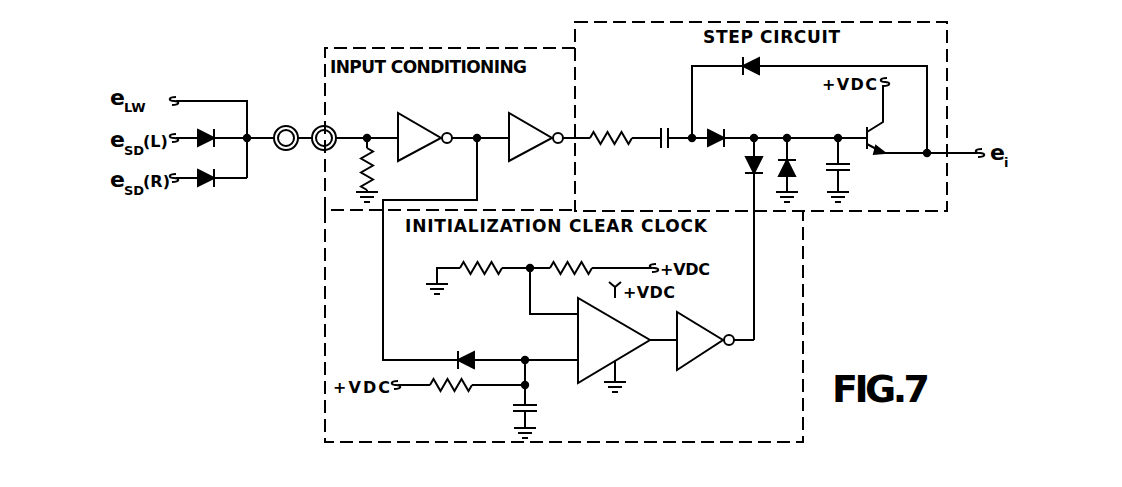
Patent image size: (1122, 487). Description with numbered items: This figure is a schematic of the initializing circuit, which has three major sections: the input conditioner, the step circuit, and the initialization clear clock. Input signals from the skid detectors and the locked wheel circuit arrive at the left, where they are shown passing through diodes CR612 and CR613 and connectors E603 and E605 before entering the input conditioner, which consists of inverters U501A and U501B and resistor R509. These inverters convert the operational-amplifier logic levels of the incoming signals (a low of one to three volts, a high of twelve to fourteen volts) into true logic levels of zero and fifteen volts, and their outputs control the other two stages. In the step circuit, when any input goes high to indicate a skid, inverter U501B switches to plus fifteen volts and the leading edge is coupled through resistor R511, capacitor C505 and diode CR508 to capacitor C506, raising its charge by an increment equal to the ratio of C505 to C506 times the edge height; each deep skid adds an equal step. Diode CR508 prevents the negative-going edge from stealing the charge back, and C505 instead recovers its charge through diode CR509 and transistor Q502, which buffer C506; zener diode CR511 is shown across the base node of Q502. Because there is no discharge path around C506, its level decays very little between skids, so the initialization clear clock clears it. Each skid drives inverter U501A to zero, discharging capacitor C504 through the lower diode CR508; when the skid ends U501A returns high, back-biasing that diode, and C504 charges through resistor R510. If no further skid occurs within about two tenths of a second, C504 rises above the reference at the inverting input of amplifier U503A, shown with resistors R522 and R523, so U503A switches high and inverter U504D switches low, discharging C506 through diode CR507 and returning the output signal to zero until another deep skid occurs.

The diode CR612 is at (207, 127).
The diode CR613 is at (207, 189).
The terminal connector E603 is at (281, 127).
The terminal connector E605 is at (336, 127).
The resistor R509 is at (388, 170).
The inverter U501A is at (453, 129).
The inverter U501B is at (549, 129).
The resistor R511 is at (625, 127).
The capacitor C505 is at (668, 129).
The diode CR508 is at (604, 239).
The diode CR509 is at (753, 76).
The diode CR507 is at (724, 239).
The zener diode CR511 is at (803, 170).
The transistor Q502 is at (862, 116).
The capacitor C506 is at (859, 170).
The resistor R522 is at (478, 268).
The resistor R523 is at (594, 258).
The amplifier U503A is at (620, 337).
The inverter U504D is at (715, 336).
The resistor R510 is at (461, 397).
The capacitor C504 is at (553, 399).